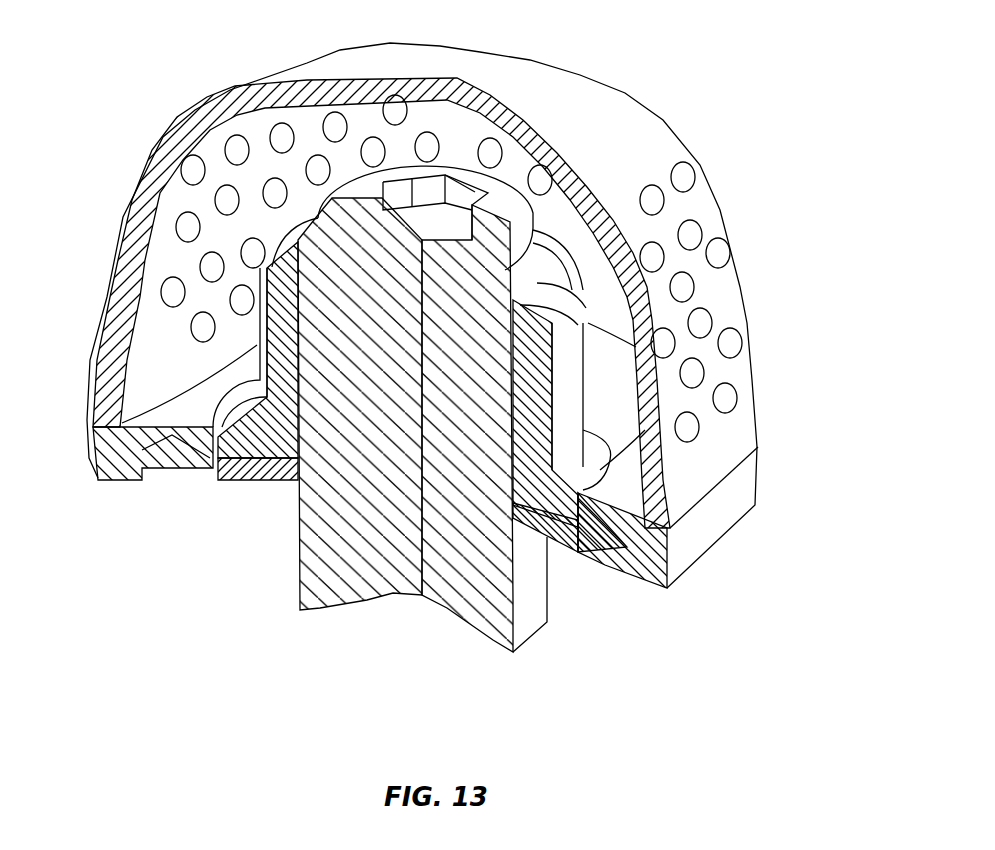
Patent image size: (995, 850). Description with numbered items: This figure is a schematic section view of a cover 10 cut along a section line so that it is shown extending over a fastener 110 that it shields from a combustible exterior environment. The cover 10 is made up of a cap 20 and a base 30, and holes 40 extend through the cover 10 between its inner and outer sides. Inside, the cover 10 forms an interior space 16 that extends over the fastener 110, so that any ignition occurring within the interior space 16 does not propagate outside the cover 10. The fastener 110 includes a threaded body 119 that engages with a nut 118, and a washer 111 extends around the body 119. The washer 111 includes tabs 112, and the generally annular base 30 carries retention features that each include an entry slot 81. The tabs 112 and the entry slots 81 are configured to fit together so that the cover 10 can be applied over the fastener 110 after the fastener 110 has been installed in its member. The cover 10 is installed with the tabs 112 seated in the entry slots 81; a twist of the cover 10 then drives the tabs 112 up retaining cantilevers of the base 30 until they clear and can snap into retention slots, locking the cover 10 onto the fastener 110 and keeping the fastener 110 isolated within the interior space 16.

The cover 10 is at (756, 108).
The interior space 16 is at (258, 252).
The cap 20 is at (705, 235).
The base 30 is at (740, 490).
The holes 40 is at (685, 175).
The entry slot 81 is at (193, 470).
The fastener 110 is at (240, 650).
The washer 111 is at (267, 482).
The tabs 112 is at (607, 557).
The nut 118 is at (533, 387).
The body 119 is at (493, 633).